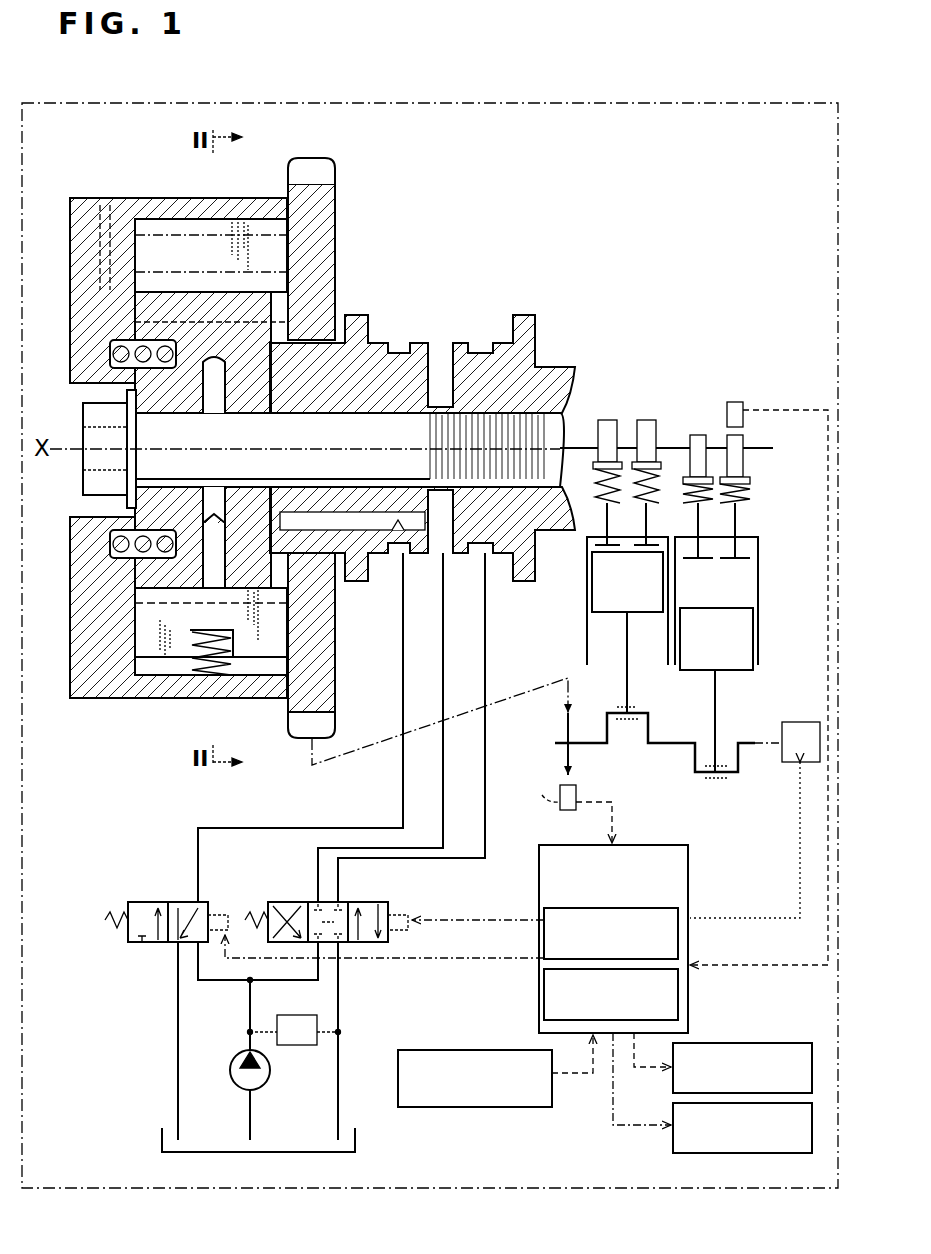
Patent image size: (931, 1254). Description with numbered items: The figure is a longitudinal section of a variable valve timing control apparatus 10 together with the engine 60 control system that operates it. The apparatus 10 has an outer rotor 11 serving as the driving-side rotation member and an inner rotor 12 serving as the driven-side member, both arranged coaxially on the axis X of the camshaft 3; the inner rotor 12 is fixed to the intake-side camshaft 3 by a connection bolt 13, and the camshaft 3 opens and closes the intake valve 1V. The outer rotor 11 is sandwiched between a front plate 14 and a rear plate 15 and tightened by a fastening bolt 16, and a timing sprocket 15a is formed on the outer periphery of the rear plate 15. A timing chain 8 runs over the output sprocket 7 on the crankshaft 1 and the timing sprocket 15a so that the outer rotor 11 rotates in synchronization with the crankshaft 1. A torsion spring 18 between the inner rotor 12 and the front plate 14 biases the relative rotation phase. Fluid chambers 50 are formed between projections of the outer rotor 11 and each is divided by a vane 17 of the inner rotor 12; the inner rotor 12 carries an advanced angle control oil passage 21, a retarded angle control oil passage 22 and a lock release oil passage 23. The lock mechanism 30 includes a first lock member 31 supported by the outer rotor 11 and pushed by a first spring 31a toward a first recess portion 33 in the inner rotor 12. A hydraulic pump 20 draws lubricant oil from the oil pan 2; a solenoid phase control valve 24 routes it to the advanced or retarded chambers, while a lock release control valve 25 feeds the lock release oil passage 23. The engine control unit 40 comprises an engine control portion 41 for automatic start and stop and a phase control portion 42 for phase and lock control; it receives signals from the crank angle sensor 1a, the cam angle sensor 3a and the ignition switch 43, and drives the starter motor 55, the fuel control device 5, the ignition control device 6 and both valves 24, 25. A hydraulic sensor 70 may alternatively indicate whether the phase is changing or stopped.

The crankshaft 1 is at (667, 745).
The crank angle sensor 1a is at (542, 798).
The intake valve 1V is at (646, 552).
The oil pan 2 is at (160, 1142).
The camshaft 3 is at (560, 365).
The cam angle sensor 3a is at (734, 400).
The fuel control device 5 is at (770, 1043).
The ignition control device 6 is at (752, 1153).
The output sprocket 7 is at (558, 738).
The timing chain 8 is at (404, 742).
The variable valve timing control apparatus 10 is at (95, 185).
The outer rotor 11 is at (160, 198).
The inner rotor 12 is at (138, 582).
The connection bolt 13 is at (83, 478).
The front plate 14 is at (72, 676).
The rear plate 15 is at (340, 213).
The timing sprocket 15a is at (332, 163).
The fastening bolt 16 is at (183, 198).
The vane 17 is at (238, 222).
The torsion spring 18 is at (108, 356).
The hydraulic pump 20 is at (238, 1055).
The advanced angle control oil passage 21 is at (212, 400).
The retarded angle control oil passage 22 is at (485, 622).
The lock release oil passage 23 is at (215, 560).
The phase control valve 24 is at (292, 900).
The lock release control valve 25 is at (142, 900).
The lock mechanism 30 is at (162, 675).
The first lock member 31 is at (184, 662).
The first spring 31a is at (232, 662).
The first recess portion 33 is at (336, 638).
The engine control unit (ECU) 40 is at (690, 890).
The engine control portion 41 is at (680, 940).
The phase control portion 42 is at (680, 985).
The ignition switch 43 is at (445, 1050).
The fluid chamber 50 is at (170, 256).
The starter motor 55 is at (755, 820).
The engine 60 is at (586, 100).
The hydraulic sensor 70 is at (294, 1030).